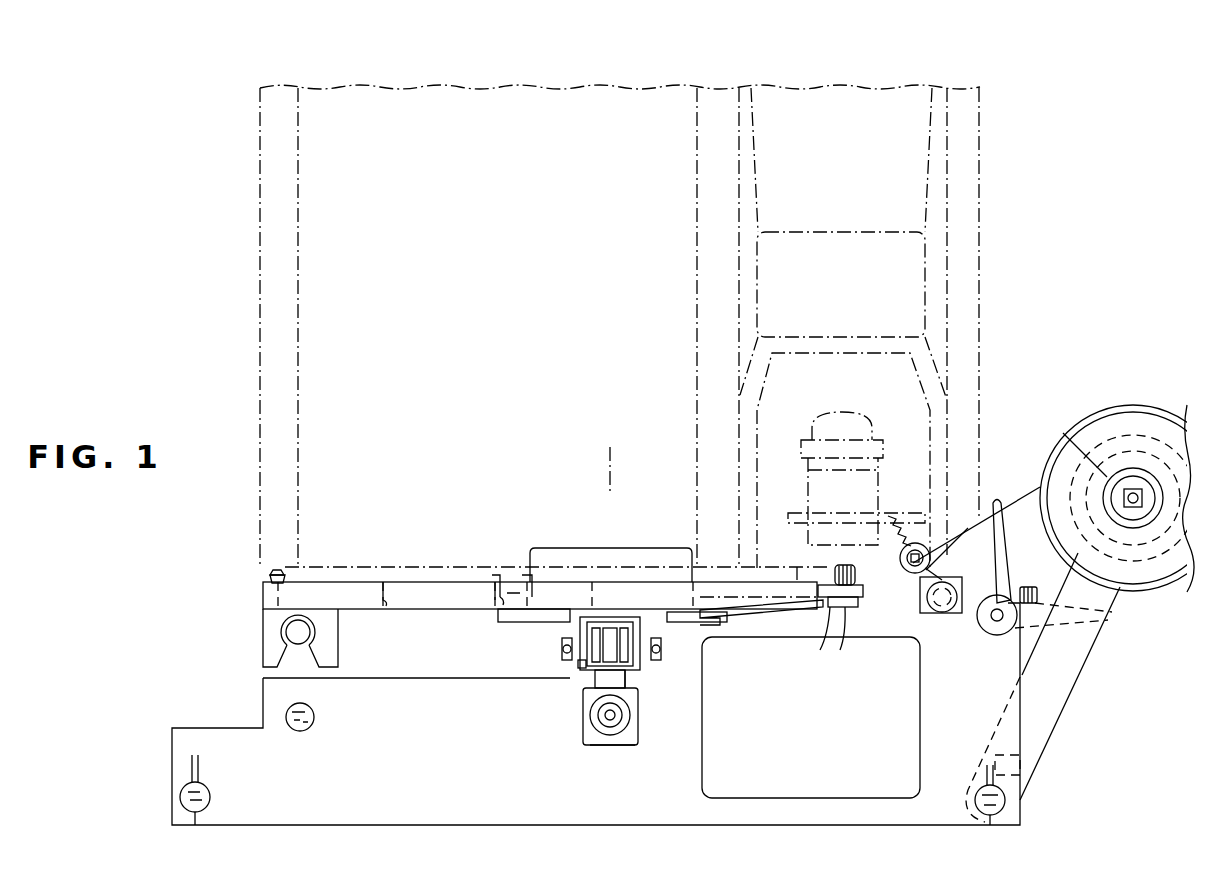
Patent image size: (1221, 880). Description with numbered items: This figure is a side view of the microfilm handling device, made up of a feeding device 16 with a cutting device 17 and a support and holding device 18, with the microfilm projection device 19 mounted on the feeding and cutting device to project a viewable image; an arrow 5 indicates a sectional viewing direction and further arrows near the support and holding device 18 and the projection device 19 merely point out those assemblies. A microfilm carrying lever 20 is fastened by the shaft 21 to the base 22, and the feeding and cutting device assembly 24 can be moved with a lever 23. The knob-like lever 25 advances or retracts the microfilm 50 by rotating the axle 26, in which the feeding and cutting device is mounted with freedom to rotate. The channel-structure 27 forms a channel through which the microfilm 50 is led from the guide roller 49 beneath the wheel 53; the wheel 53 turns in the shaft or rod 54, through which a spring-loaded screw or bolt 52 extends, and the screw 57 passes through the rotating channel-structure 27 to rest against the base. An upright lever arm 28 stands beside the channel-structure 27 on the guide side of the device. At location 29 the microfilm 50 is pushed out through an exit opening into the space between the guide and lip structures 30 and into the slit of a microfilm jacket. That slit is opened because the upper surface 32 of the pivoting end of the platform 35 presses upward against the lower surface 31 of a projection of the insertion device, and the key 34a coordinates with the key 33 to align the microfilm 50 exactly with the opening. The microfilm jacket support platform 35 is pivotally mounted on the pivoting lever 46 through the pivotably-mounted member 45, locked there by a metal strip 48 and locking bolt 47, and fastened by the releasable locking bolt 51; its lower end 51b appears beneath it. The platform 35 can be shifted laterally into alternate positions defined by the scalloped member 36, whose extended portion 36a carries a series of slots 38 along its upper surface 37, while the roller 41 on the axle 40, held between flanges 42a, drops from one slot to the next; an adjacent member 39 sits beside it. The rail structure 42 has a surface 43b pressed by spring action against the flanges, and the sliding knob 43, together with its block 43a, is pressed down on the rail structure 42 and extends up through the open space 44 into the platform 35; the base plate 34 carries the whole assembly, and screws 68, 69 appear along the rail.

The section arrow 5 is at (567, 469).
The feeding device 16 is at (1080, 676).
The cutting device 17 is at (1012, 505).
The support and holding device 18 is at (403, 545).
The microfilm projection device 19 is at (990, 181).
The microfilm carrying lever 20 is at (1070, 677).
The shaft 21 is at (1005, 800).
The base 22 is at (920, 765).
The lever 23 is at (1045, 622).
The feeding and cutting device assembly 24 is at (1055, 614).
The lever 25 is at (985, 628).
The axle 26 is at (920, 606).
The channel-structure 27 is at (936, 548).
The lever arm 28 is at (1002, 540).
The exit opening location 29 is at (848, 567).
The guide and lip structures 30 is at (864, 590).
The lower surface 31 is at (792, 560).
The upper surface 32 is at (835, 580).
The key 33 is at (817, 641).
The base plate 34 is at (657, 817).
The key 34a is at (861, 641).
The microfilm jacket support platform 35 is at (712, 600).
The scalloped member 36 is at (588, 692).
The extended portion 36a is at (598, 673).
The upper surface 37 is at (630, 690).
The slots 38 is at (578, 660).
The lever member 39 is at (625, 632).
The axle 40 is at (610, 640).
The roller 41 is at (598, 628).
The rail structure 42 is at (608, 594).
The flange 42a is at (562, 645).
The sliding knob 43 is at (548, 556).
The rail block 43a is at (640, 550).
The lower surface / upper surface 43b is at (612, 629).
The open space 44 is at (530, 580).
The pivotably-mounted member 45 is at (338, 634).
The pivoting lever 46 is at (290, 632).
The locking bolt 47 is at (272, 575).
The metal strip 48 is at (270, 583).
The roller 49 is at (1128, 412).
The microfilm 50 is at (1033, 490).
The releasable locking bolt 51 is at (598, 722).
The bearing block bottom 51b is at (620, 745).
The screw or bolt 52 is at (893, 519).
The wheel 53 is at (902, 530).
The shaft or rod 54 is at (918, 551).
The screw 57 is at (1030, 587).
The screw 68 is at (500, 580).
The screw 69 is at (388, 580).